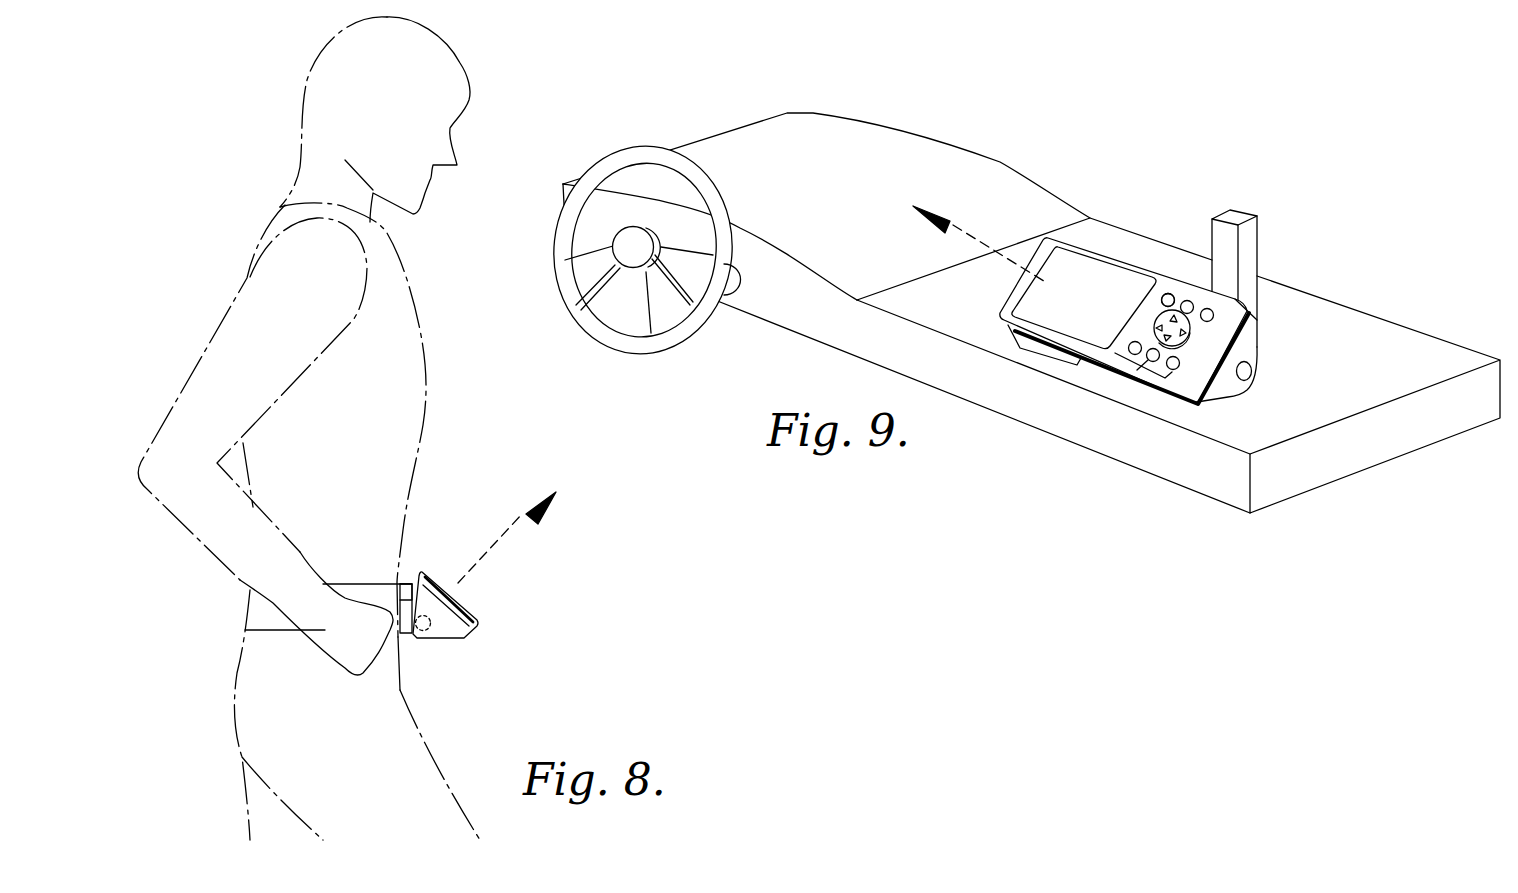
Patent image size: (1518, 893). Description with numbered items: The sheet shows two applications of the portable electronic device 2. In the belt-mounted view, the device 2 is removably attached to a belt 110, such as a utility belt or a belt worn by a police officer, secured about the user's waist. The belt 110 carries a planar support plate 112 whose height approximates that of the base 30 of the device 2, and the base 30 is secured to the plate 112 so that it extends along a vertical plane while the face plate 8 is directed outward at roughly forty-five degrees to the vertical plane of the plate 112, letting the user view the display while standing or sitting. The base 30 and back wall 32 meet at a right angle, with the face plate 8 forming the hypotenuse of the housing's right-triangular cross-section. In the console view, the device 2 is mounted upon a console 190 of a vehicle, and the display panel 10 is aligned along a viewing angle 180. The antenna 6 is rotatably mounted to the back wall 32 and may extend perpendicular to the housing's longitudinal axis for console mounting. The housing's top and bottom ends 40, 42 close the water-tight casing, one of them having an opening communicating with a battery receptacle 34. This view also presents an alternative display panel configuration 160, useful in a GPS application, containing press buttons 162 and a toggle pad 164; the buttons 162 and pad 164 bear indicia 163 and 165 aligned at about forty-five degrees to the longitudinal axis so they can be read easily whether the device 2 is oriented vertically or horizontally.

In FIG. 9, the portable electronic device 2 is at (1140, 175).
In FIG. 9, the antenna 6 is at (1250, 230).
In FIG. 8, the face plate 8 is at (472, 618).
In FIG. 9, the face plate 8 is at (1066, 235).
In FIG. 9, the display panel 10 is at (1040, 353).
In FIG. 8, the base 30 is at (400, 656).
In FIG. 8, the back wall 32 is at (443, 640).
In FIG. 9, the back wall 32 is at (1260, 347).
In FIG. 9, the battery receptacle 34 is at (1253, 373).
In FIG. 9, the top end 40 is at (1250, 328).
In FIG. 9, the bottom end 42 is at (1022, 296).
In FIG. 8, the belt 110 is at (263, 618).
In FIG. 8, the planar support plate 112 is at (403, 573).
In FIG. 9, the display panel configuration 160 is at (1137, 370).
In FIG. 9, the press buttons 162 is at (1163, 300).
In FIG. 9, the indicia 163 is at (1170, 297).
In FIG. 9, the toggle pad 164 is at (1186, 343).
In FIG. 9, the indicia 165 is at (1153, 323).
In FIG. 9, the viewing angle 180 is at (982, 236).
In FIG. 9, the console 190 is at (1397, 380).